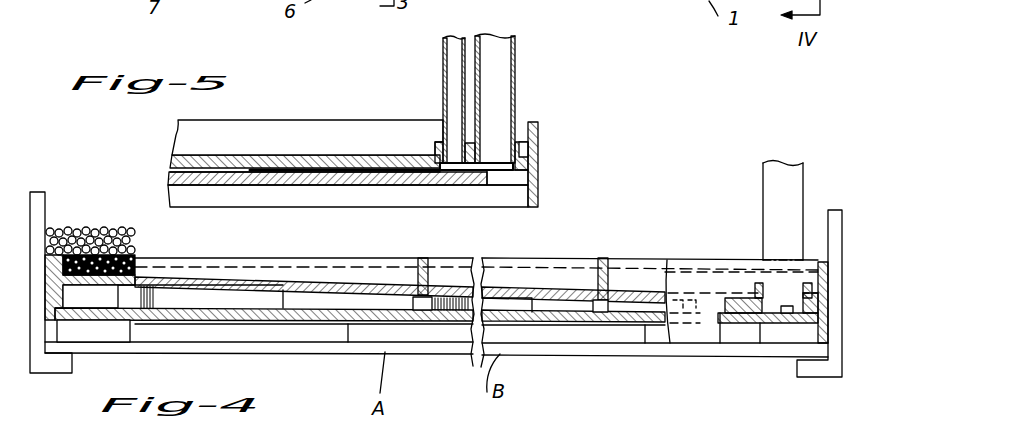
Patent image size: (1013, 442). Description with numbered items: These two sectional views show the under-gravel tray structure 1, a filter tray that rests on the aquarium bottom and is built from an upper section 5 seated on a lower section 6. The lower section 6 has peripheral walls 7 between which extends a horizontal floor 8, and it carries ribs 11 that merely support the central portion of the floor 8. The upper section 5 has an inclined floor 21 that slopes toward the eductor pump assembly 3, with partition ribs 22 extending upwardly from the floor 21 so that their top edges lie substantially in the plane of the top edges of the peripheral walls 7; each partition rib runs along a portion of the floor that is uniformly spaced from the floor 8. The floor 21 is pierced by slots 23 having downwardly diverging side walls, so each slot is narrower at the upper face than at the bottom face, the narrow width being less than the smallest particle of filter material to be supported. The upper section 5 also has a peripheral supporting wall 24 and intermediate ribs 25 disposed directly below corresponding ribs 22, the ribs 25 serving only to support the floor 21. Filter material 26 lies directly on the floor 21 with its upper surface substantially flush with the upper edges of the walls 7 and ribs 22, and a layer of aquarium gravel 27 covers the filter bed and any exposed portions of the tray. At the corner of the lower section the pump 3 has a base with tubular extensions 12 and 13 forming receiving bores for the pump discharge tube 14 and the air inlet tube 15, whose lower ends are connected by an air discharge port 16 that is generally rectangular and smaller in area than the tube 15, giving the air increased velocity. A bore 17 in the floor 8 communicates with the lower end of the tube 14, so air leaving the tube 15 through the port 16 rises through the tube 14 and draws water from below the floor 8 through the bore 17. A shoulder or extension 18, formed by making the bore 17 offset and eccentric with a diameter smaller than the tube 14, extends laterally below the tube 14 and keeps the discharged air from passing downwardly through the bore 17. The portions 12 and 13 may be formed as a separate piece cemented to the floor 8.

In FIG. 4, the under-gravel tray structure 1 is at (635, 255).
In FIG. 5, the eductor pump assembly 3 is at (525, 77).
In FIG. 4, the eductor pump assembly 3 is at (808, 248).
In FIG. 4, the upper section 5 is at (587, 257).
In FIG. 4, the lower section 6 is at (552, 345).
In FIG. 4, the peripheral walls 7 is at (50, 333).
In FIG. 5, the horizontal wall or floor 8 is at (378, 185).
In FIG. 4, the horizontal wall or floor 8 is at (348, 322).
In FIG. 4, the ribs 11 is at (452, 333).
In FIG. 5, the tubular extension 12 is at (513, 142).
In FIG. 4, the tubular extension 12 is at (757, 290).
In FIG. 5, the tubular extension 13 is at (435, 148).
In FIG. 5, the pump discharge tube 14 is at (517, 60).
In FIG. 4, the pump discharge tube 14 is at (778, 183).
In FIG. 5, the air inlet tube 15 is at (442, 50).
In FIG. 5, the air discharge port 16 is at (472, 168).
In FIG. 4, the air discharge port 16 is at (787, 315).
In FIG. 5, the bore 17 is at (507, 192).
In FIG. 4, the bore 17 is at (788, 322).
In FIG. 5, the shoulder or extension 18 is at (487, 168).
In FIG. 5, the inclined floor 21 is at (238, 155).
In FIG. 4, the inclined floor 21 is at (277, 280).
In FIG. 4, the partition ribs 22 is at (437, 243).
In FIG. 4, the slots 23 is at (305, 290).
In FIG. 4, the peripheral supporting wall 24 is at (65, 295).
In FIG. 4, the intermediate ribs 25 is at (134, 298).
In FIG. 4, the filter material 26 is at (143, 265).
In FIG. 4, the aquarium gravel 27 is at (130, 244).